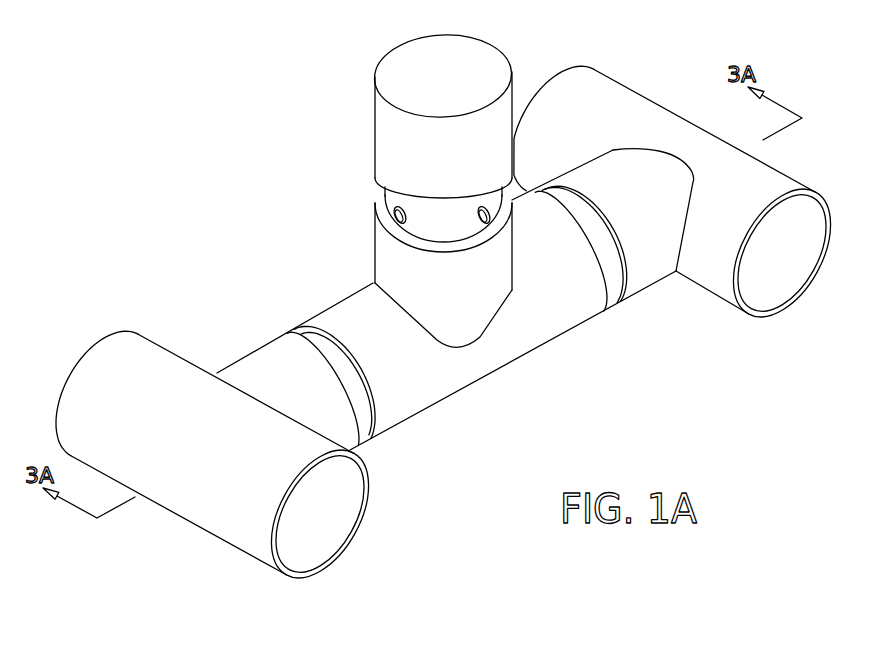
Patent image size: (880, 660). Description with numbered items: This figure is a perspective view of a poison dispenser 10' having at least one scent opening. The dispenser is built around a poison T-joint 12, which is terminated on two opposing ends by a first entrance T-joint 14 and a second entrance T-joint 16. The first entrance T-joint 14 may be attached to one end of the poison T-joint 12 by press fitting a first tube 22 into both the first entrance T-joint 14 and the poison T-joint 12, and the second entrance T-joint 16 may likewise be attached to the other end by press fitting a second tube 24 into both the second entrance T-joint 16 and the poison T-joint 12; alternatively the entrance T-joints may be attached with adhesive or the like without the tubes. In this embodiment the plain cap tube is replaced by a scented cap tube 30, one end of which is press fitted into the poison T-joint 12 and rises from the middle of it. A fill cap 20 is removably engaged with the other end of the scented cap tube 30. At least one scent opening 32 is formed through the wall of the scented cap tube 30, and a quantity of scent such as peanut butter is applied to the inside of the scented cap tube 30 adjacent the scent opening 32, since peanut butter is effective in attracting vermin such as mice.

The poison dispenser 10' is at (201, 198).
The poison T-joint 12 is at (548, 328).
The first entrance T-joint 14 is at (135, 347).
The second entrance T-joint 16 is at (777, 183).
The fill cap 20 is at (395, 97).
The first tube 22 is at (358, 407).
The second tube 24 is at (608, 273).
The scented cap tube 30 is at (407, 237).
The scent opening 32 is at (396, 212).